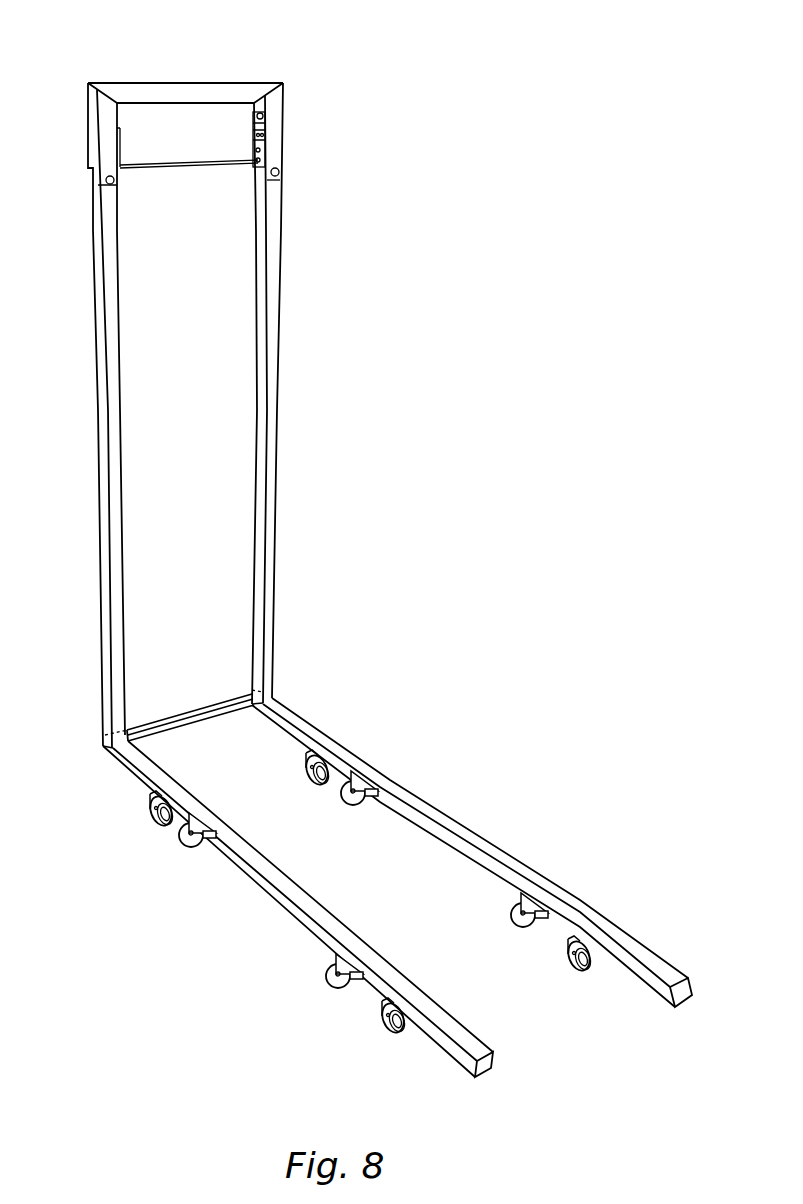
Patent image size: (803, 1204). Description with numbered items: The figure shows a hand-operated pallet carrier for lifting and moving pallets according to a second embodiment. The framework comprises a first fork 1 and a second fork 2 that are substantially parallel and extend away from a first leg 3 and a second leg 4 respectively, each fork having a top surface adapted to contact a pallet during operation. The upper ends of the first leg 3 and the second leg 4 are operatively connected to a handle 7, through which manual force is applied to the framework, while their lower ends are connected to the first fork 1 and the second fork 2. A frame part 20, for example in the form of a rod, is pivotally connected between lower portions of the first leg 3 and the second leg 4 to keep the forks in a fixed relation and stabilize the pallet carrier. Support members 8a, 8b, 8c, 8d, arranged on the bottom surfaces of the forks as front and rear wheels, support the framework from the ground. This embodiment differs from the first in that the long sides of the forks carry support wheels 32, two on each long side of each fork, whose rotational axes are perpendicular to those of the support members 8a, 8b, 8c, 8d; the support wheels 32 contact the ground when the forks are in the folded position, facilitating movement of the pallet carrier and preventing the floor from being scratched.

The handle 7 is at (190, 82).
The second leg 4 is at (110, 420).
The first leg 3 is at (272, 413).
The frame part 20 is at (210, 712).
The first fork 1 is at (457, 820).
The second fork 2 is at (262, 892).
The support member 8a is at (305, 770).
The support member 8b is at (565, 954).
The support member 8c is at (378, 1019).
The support member 8d is at (148, 812).
The support wheel 32 is at (343, 795).